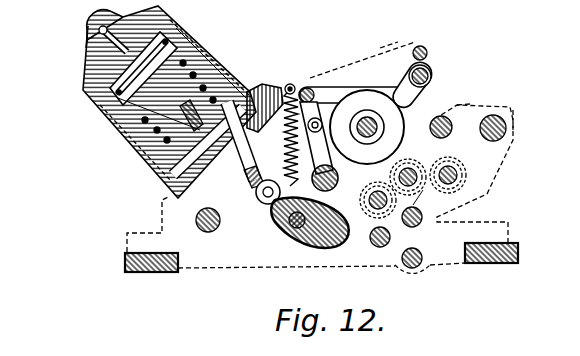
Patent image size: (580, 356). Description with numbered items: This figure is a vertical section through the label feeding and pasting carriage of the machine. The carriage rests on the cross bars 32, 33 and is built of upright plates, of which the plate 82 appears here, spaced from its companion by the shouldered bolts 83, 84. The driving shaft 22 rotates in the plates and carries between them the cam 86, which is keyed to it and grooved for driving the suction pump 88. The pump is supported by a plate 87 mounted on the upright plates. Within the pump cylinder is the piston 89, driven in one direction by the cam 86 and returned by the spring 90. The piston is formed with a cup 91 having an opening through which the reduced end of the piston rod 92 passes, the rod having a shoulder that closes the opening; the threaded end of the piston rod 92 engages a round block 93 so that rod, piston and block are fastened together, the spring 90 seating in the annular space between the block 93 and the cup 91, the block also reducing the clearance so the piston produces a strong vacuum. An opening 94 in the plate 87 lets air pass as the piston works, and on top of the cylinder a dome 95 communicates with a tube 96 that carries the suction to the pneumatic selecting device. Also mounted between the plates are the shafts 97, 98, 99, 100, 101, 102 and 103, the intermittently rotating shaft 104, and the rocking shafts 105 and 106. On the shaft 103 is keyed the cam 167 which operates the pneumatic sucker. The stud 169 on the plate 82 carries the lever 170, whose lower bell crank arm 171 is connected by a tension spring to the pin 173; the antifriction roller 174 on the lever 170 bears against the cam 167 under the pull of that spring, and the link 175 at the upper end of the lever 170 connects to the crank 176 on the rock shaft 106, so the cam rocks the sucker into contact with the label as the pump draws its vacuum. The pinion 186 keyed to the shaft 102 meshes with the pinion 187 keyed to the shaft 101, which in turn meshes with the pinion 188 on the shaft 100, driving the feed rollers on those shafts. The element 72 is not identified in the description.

The shaft 22 is at (320, 187).
The cross bar 32 is at (505, 263).
The cross bar 33 is at (150, 272).
The plunger rod 72 is at (284, 146).
The upright plate 82 is at (328, 66).
The shouldered bolt 83 is at (208, 233).
The shouldered bolt 84 is at (516, 120).
The cam 86 is at (274, 228).
The plate 87 is at (272, 88).
The suction pump 88 is at (193, 58).
The piston 89 is at (128, 108).
The spring 90 is at (83, 80).
The cup 91 is at (150, 140).
The piston rod 92 is at (258, 188).
The round block 93 is at (222, 72).
The opening 94 is at (264, 134).
The dome 95 is at (88, 38).
The tube 96 is at (120, 22).
The shaft 97 is at (426, 270).
The shaft 98 is at (420, 223).
The shaft 99 is at (387, 258).
The shaft 100 is at (462, 168).
The shaft 101 is at (411, 166).
The shaft 102 is at (378, 189).
The shaft 103 is at (375, 122).
The shaft 104 is at (458, 104).
The shaft 105 is at (398, 43).
The rock shaft 106 is at (428, 56).
The cam 167 is at (406, 131).
The stud 169 is at (367, 127).
The lever 170 is at (346, 90).
The bell crank arm 171 is at (319, 146).
The pin 173 is at (291, 85).
The antifriction roller 174 is at (402, 89).
The link 175 is at (335, 85).
The crank 176 is at (432, 80).
The pinion 186 is at (364, 238).
The pinion 187 is at (423, 192).
The pinion 188 is at (451, 163).